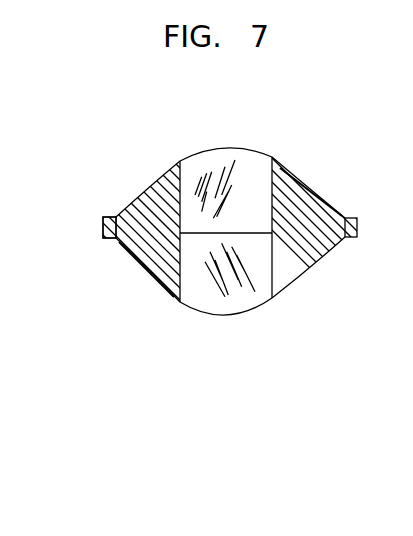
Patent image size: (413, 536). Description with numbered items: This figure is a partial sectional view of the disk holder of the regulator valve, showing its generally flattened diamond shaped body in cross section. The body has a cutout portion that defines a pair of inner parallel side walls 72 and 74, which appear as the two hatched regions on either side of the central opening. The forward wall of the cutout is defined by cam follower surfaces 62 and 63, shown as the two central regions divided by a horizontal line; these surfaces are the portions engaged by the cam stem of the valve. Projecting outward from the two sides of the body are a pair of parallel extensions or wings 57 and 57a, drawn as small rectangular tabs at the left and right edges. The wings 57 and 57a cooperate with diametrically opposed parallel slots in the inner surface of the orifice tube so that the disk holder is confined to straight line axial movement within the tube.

The wing 57 is at (354, 218).
The wing 57a is at (106, 241).
The cam follower surface 62 is at (250, 302).
The cam follower surface 63 is at (248, 164).
The inner parallel side wall 72 is at (180, 176).
The inner parallel side wall 74 is at (267, 177).